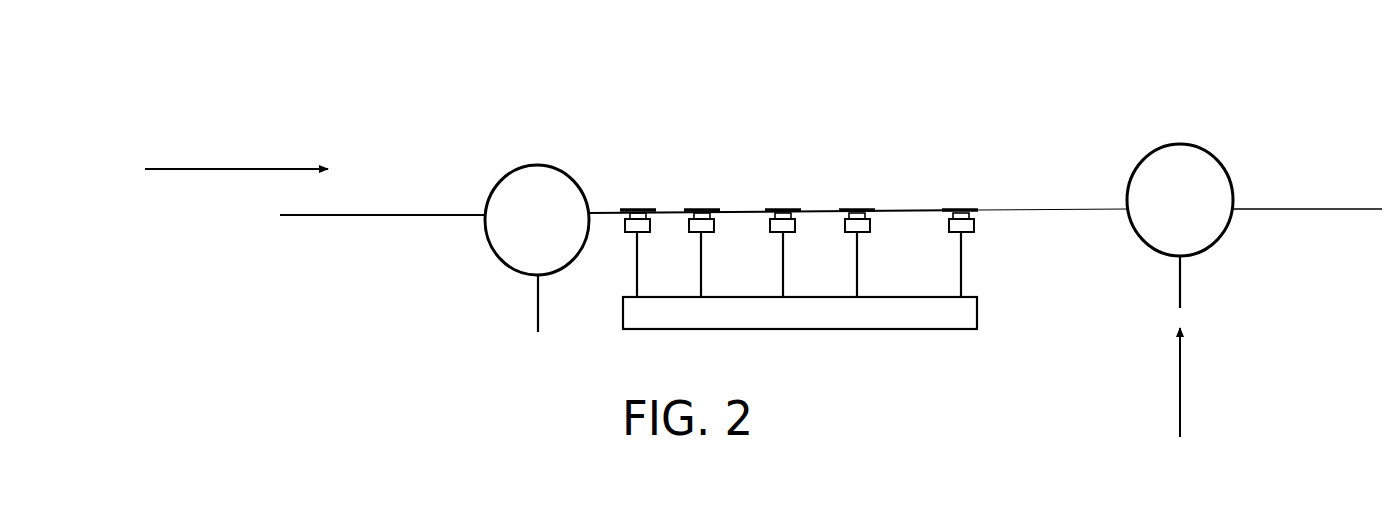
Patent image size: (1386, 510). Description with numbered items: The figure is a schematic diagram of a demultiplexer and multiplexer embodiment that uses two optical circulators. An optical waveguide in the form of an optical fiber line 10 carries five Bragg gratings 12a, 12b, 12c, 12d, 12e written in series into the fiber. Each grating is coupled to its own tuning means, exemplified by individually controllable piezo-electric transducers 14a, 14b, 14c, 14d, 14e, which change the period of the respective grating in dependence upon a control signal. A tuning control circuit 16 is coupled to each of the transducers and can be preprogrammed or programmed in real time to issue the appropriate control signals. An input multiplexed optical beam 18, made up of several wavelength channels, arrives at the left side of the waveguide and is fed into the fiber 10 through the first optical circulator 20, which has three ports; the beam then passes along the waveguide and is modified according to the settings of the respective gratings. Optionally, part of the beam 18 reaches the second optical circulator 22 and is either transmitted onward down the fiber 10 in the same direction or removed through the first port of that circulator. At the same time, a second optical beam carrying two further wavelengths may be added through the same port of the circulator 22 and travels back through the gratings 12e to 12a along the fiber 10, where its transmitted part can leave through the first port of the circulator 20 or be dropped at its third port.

The optical fiber line 10 is at (1280, 209).
The Bragg grating 12a is at (630, 210).
The Bragg grating 12b is at (688, 210).
The Bragg grating 12c is at (768, 210).
The Bragg grating 12d is at (842, 210).
The Bragg grating 12e is at (945, 210).
The piezo-electric transducer 14a is at (650, 223).
The piezo-electric transducer 14b is at (714, 223).
The piezo-electric transducer 14c is at (796, 223).
The piezo-electric transducer 14d is at (869, 223).
The piezo-electric transducer 14e is at (974, 223).
The tuning control circuit 16 is at (802, 337).
The input multiplexed optical beam 18 is at (235, 168).
The optical circulator 20 is at (540, 166).
The second optical circulator 22 is at (1185, 145).